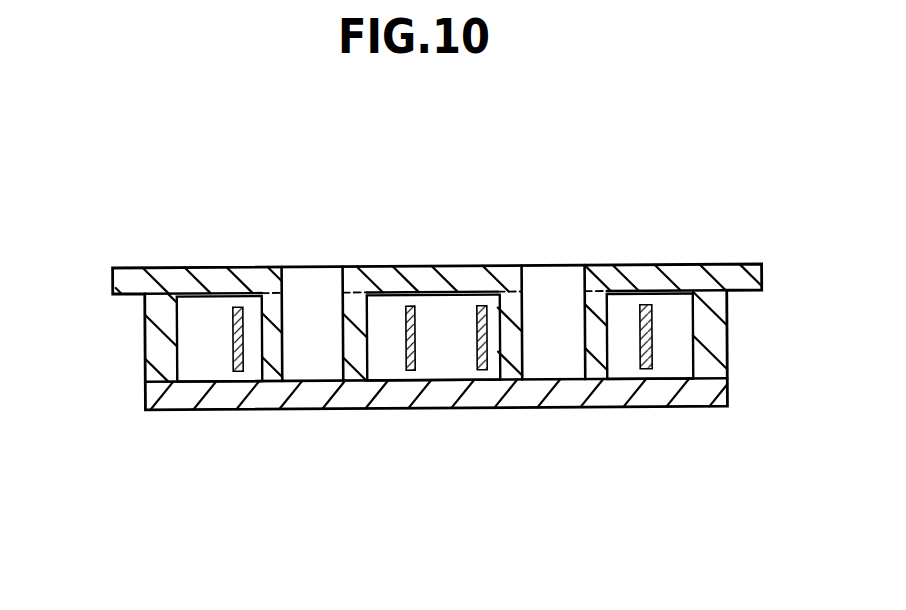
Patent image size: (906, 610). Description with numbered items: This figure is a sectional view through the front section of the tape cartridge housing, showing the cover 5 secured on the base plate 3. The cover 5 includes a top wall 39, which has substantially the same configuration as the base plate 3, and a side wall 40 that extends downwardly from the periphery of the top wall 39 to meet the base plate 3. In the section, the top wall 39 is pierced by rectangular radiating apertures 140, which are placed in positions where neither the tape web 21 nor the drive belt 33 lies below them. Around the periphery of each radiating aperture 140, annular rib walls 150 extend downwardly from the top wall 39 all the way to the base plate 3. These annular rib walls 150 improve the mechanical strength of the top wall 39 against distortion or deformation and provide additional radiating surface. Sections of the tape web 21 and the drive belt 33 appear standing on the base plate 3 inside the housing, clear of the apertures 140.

The cover 5 is at (434, 261).
The top wall 39 is at (217, 265).
The radiating apertures 140 is at (284, 273).
The annular rib walls 150 is at (355, 327).
The side wall 40 is at (145, 347).
The base plate 3 is at (185, 402).
The tape web 21 is at (237, 374).
The drive belt 33 is at (483, 373).